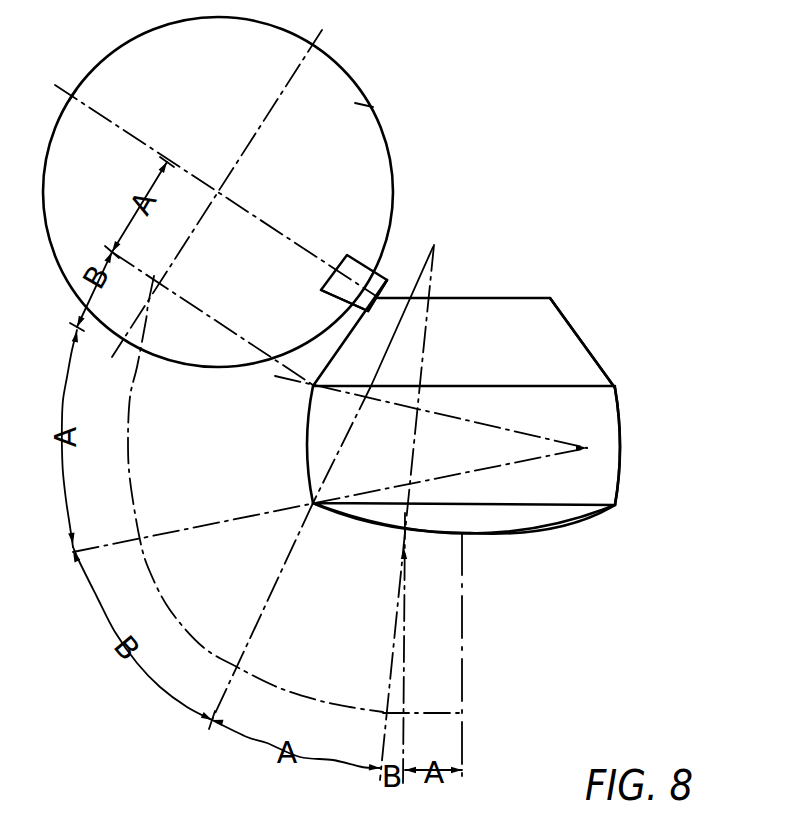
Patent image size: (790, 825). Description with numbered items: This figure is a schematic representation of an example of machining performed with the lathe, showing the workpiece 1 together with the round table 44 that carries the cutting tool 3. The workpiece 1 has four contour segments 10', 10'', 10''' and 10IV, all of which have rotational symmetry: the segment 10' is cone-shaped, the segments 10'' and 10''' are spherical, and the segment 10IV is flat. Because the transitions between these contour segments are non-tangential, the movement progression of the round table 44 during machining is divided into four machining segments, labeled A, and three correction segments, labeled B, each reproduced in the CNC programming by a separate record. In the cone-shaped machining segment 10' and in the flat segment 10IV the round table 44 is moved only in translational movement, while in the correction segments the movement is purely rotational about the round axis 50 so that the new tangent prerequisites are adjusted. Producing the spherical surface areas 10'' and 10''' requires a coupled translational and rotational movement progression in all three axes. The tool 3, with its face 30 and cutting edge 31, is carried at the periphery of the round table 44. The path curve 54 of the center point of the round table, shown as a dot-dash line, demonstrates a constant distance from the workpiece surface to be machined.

The workpiece 1 is at (527, 317).
The cutting tool 3 is at (347, 255).
The cone-shaped contour segment 10' is at (612, 342).
The spherical contour segment 10'' is at (665, 446).
The spherical contour segment 10''' is at (565, 537).
The flat contour segment 10IV is at (500, 533).
The tool face 30 is at (362, 313).
The cutting edge 31 is at (387, 280).
The round table 44 is at (370, 107).
The axis of rotation 50 is at (218, 190).
The path curve 54 is at (128, 463).